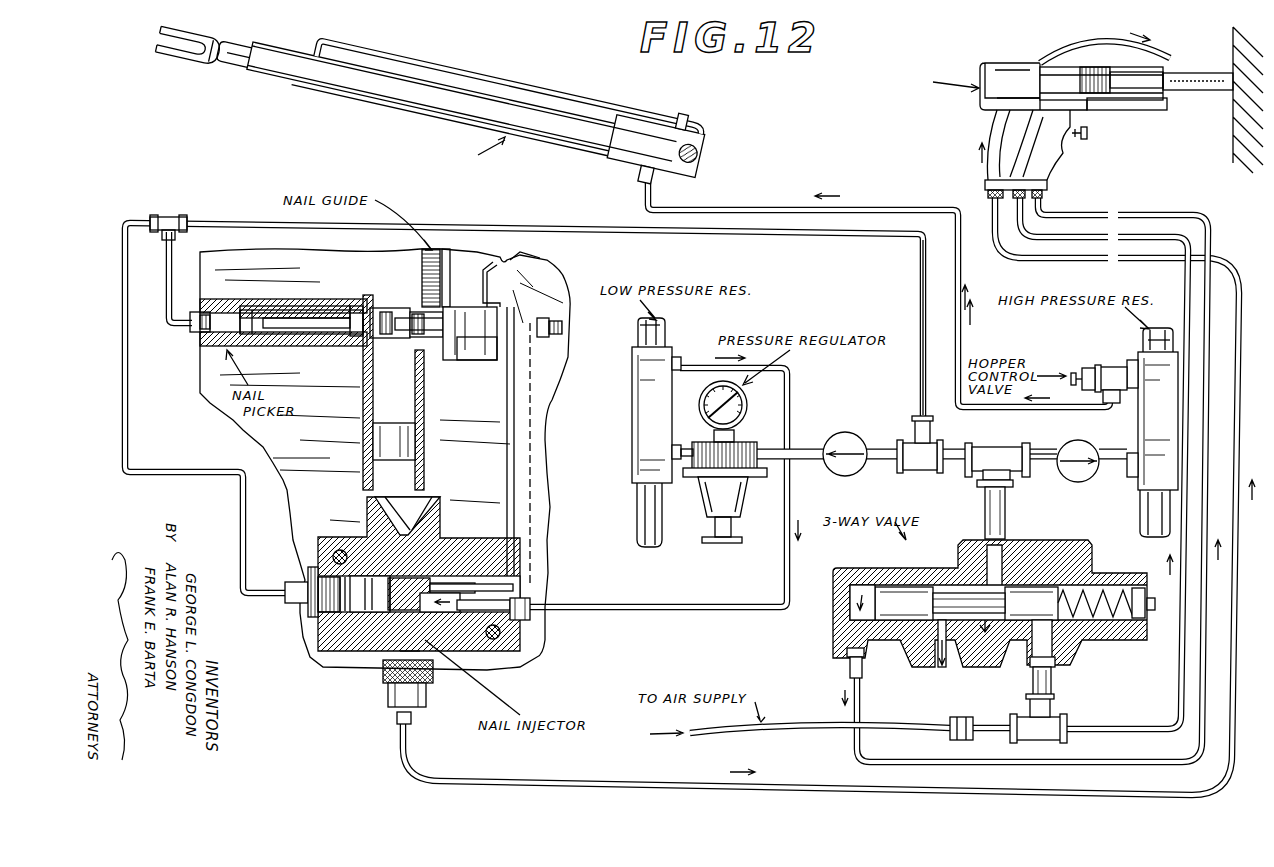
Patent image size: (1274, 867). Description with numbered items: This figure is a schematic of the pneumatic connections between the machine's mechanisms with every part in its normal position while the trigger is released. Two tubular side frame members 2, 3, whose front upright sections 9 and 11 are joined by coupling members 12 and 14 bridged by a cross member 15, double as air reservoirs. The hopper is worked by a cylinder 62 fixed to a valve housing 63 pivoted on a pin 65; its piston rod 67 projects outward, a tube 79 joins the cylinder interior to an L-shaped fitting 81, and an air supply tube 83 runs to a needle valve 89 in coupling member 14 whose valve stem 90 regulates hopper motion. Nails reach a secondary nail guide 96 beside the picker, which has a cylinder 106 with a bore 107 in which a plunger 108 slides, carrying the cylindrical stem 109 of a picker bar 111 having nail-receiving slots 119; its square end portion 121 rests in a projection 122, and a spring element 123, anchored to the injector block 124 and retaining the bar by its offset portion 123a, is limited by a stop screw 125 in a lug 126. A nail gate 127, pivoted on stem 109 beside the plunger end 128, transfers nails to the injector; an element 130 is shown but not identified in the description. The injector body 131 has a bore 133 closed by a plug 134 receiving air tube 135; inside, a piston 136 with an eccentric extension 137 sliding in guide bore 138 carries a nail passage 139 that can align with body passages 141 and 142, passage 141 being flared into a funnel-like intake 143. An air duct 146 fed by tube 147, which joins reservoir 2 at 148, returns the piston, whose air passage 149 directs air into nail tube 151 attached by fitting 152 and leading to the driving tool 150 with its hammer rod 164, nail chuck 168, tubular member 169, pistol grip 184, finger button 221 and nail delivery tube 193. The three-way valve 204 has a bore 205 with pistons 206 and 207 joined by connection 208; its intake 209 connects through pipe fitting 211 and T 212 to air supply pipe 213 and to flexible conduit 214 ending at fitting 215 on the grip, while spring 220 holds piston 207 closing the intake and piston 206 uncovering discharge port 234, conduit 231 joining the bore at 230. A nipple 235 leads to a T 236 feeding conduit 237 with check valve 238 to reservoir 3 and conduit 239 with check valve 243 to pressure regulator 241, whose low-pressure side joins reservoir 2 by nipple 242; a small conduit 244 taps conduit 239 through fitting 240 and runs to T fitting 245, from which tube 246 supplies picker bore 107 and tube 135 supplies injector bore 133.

The tubular side frame member 2 is at (624, 328).
The tubular side frame member 3 is at (1131, 340).
The front upright section 9 is at (668, 334).
The front upright section 11 is at (640, 514).
The coupling member 12 is at (673, 427).
The coupling member 14 is at (1070, 411).
The cross member 15 is at (551, 540).
The cylinder 62 is at (380, 101).
The valve housing 63 is at (632, 160).
The pivot pin 65 is at (712, 149).
The piston rod 67 is at (233, 72).
The tube 79 is at (532, 80).
The L-shaped fitting 81 is at (699, 112).
The air supply tube 83 is at (762, 208).
The needle valve 89 is at (1110, 367).
The valve stem 90 is at (1070, 377).
The secondary nail guide 96 is at (442, 236).
The picker cylinder 106 is at (285, 319).
The bore 107 is at (300, 302).
The plunger 108 is at (255, 342).
The cylindrical stem 109 is at (318, 334).
The picker bar 111 is at (449, 350).
The nail-receiving slots 119 is at (393, 311).
The end portion 121 is at (470, 312).
The projection 122 is at (487, 362).
The spring element 123 is at (518, 392).
The upper offset portion 123a is at (487, 272).
The nail injector block 124 is at (515, 641).
The stop screw 125 is at (548, 318).
The lug 126 is at (530, 260).
The nail gate 127 is at (353, 449).
The end of plunger 128 is at (362, 347).
The plate 130 is at (363, 399).
The injector body 131 is at (422, 592).
The cylindrical bore 133 is at (325, 612).
The plug 134 is at (292, 598).
The air tube 135 is at (127, 402).
The piston 136 is at (345, 614).
The cylindrical extension 137 is at (462, 582).
The guide bore 138 is at (513, 587).
The nail passage 139 is at (372, 574).
The nail passage 141 is at (455, 545).
The nail passage 142 is at (420, 618).
The funnel-like intake 143 is at (440, 497).
The air duct 146 is at (484, 656).
The air supply tube 147 is at (605, 612).
The connection 148 is at (680, 364).
The air passage 149 is at (378, 625).
The nail driving tool 150 is at (1113, 133).
The nail tube 151 is at (1023, 255).
The fitting 152 is at (385, 680).
The hammer rod 164 is at (1148, 74).
The nail chuck 168 is at (1185, 95).
The tubular member 169 is at (1143, 110).
The pistol grip 184 is at (1060, 158).
The flexible nail delivery tube 193 is at (1095, 39).
The three-way valve 204 is at (967, 641).
The longitudinal bore 205 is at (862, 585).
The piston 206 is at (904, 603).
The piston 207 is at (1031, 603).
The connection 208 is at (1000, 632).
The intake 209 is at (1052, 650).
The pipe fitting 211 is at (1052, 690).
The T fitting 212 is at (1068, 722).
The air supply pipe 213 is at (950, 738).
The flexible conduit 214 is at (1142, 235).
The fitting 215 is at (1004, 205).
The spring 220 is at (1105, 590).
The finger button 221 is at (1088, 133).
The connection 230 is at (855, 670).
The flexible conduit 231 is at (1110, 212).
The discharge port 234 is at (942, 672).
The pipe nipple 235 is at (988, 510).
The T fitting 236 is at (1000, 447).
The conduit 237 is at (1045, 450).
The check valve 238 is at (1073, 482).
The conduit 239 is at (810, 449).
The fitting 240 is at (914, 432).
The pressure regulator 241 is at (735, 505).
The nipple 242 is at (676, 462).
The check valve 243 is at (842, 476).
The conduit 244 is at (923, 316).
The T fitting 245 is at (166, 215).
The tube 246 is at (168, 325).